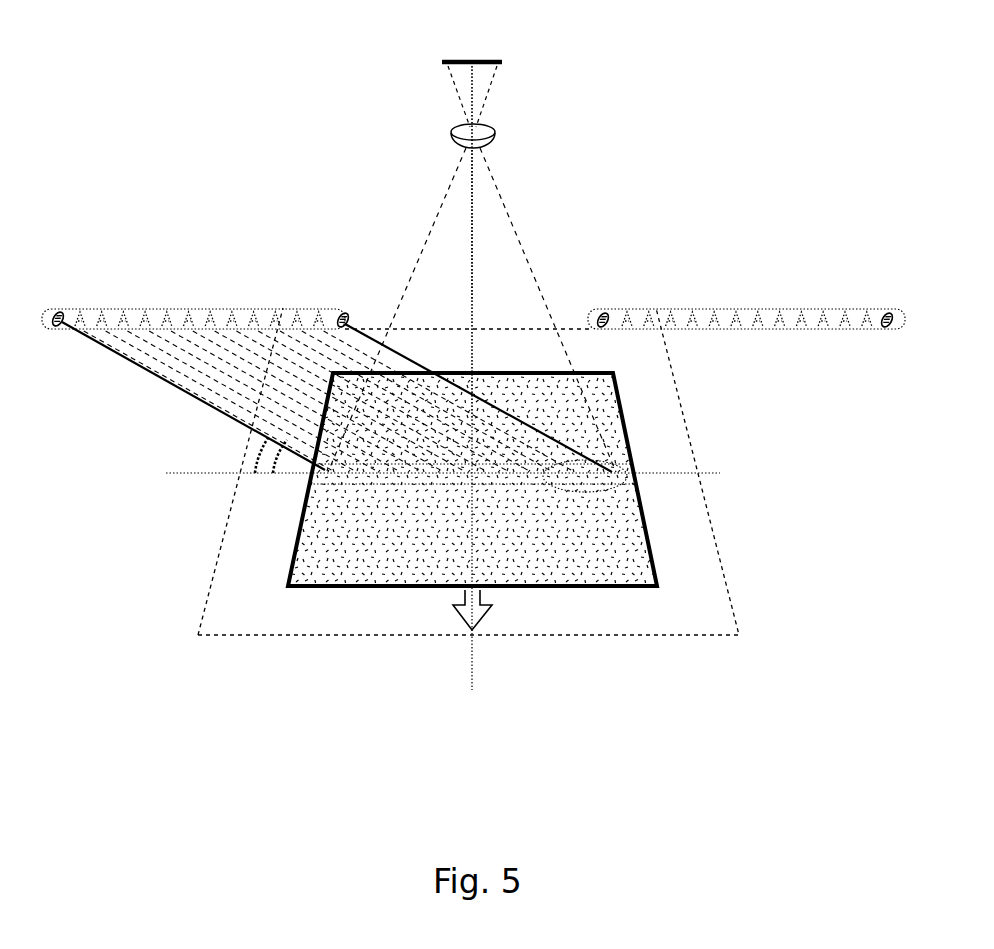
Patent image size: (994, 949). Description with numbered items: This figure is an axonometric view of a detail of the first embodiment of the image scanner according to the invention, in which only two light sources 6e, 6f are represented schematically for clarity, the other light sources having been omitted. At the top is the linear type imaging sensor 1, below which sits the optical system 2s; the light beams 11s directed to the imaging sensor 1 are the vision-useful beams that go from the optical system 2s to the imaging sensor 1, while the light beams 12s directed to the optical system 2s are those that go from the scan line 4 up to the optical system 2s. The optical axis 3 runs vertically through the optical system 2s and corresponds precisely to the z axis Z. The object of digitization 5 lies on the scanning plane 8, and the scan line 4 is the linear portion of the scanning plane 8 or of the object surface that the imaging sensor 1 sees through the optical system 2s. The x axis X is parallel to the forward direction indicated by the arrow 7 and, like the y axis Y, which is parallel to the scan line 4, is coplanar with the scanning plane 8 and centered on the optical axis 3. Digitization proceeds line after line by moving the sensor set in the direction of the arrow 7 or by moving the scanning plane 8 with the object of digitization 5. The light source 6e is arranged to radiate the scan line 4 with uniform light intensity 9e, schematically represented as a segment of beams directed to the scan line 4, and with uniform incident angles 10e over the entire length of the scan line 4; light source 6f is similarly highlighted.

The imaging sensor 1 is at (473, 58).
The optical system 2s is at (495, 134).
The optical axis 3 is at (477, 222).
The scan line 4 is at (547, 473).
The object of digitization 5 is at (658, 582).
The light source 6e is at (187, 309).
The light source 6f is at (735, 309).
The arrow 7 is at (470, 618).
The scanning plane 8 is at (736, 635).
The uniform light intensity 9e is at (200, 390).
The uniform incident angles 10e is at (257, 457).
The light beams directed to the imaging sensor 11s is at (497, 77).
The light beams directed to the optical system 12s is at (520, 243).
The x axis X is at (472, 672).
The y axis Y is at (717, 473).
The z axis Z is at (477, 222).